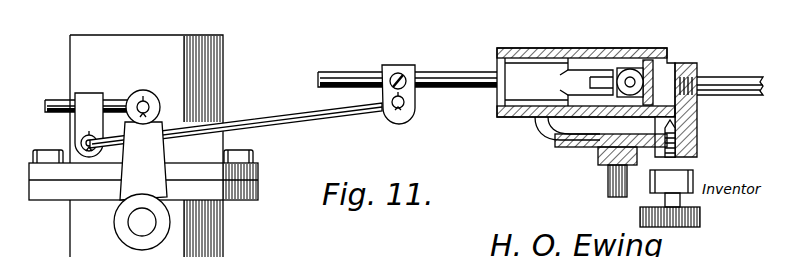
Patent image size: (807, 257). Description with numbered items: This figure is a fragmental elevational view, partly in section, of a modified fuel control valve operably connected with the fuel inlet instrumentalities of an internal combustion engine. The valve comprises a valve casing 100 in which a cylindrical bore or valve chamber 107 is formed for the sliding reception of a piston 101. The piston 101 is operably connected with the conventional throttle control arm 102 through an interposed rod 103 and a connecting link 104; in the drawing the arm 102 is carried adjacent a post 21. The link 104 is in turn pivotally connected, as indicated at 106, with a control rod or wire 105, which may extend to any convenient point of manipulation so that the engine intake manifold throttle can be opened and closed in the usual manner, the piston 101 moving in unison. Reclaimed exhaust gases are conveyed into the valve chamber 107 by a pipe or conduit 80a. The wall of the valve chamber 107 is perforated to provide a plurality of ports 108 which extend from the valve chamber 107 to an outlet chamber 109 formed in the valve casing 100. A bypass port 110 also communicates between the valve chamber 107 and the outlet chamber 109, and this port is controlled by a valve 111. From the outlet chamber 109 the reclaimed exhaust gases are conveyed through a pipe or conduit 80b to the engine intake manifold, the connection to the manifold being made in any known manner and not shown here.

The post 21 is at (223, 50).
The control rod 105 is at (56, 100).
The pivotal connection 106 is at (81, 142).
The connecting link 104 is at (275, 117).
The throttle control arm 102 is at (157, 190).
The rod 103 is at (425, 78).
The piston 101 is at (598, 45).
The valve chamber 107 is at (537, 56).
The valve casing 100 is at (650, 60).
The pipe or conduit 80a is at (740, 80).
The bypass port 110 is at (697, 112).
The valve 111 is at (693, 146).
The ports 108 is at (560, 128).
The outlet chamber 109 is at (598, 136).
The pipe or conduit 80b is at (612, 188).